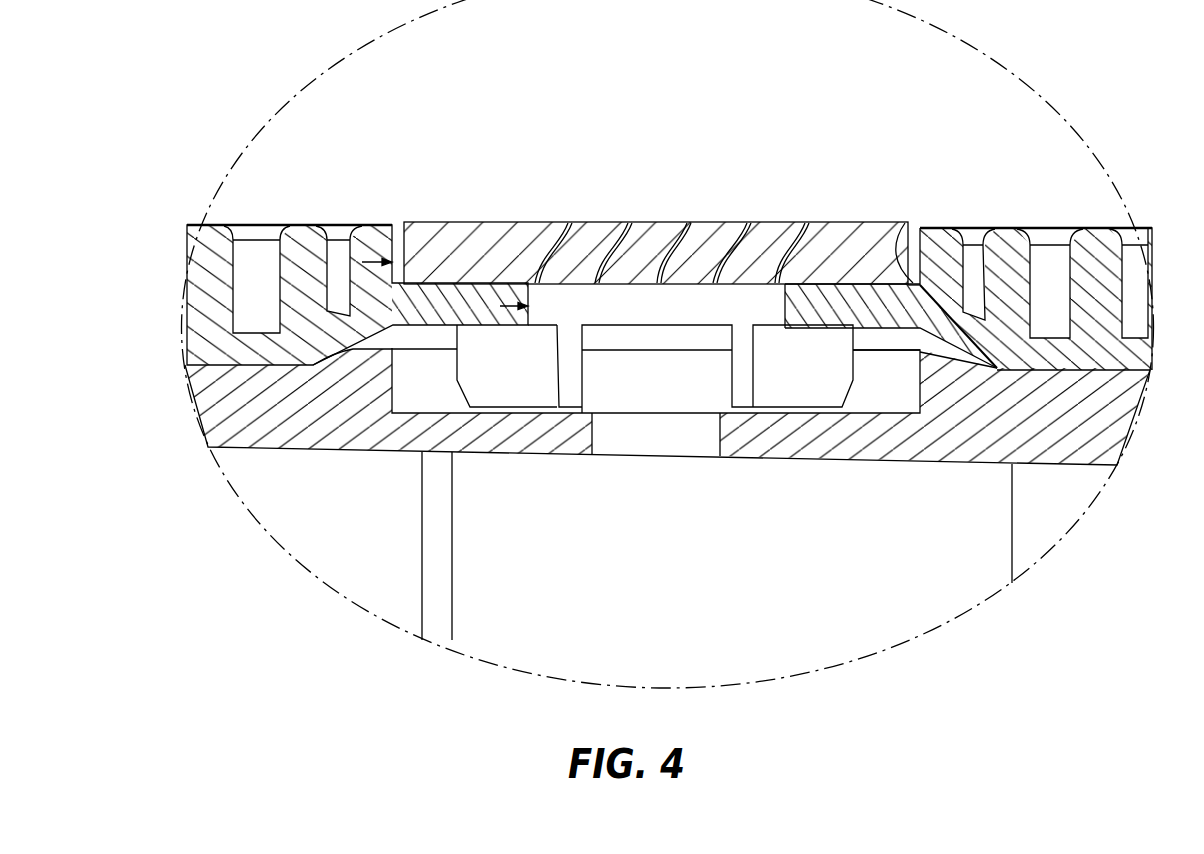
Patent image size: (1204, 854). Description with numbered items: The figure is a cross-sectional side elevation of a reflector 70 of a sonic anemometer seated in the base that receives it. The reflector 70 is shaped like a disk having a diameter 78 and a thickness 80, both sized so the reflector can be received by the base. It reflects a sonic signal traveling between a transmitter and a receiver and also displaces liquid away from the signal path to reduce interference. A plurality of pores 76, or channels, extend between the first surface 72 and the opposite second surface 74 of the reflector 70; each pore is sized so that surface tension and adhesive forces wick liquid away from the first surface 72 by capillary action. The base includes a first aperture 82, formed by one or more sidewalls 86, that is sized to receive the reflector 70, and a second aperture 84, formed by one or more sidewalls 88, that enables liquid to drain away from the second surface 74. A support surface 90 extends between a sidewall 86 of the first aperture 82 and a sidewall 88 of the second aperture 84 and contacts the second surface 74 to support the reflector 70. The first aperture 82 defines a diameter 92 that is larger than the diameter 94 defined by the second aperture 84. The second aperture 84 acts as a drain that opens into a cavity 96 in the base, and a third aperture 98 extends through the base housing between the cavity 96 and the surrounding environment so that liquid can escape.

The reflector 70 is at (426, 228).
The first surface 72 is at (828, 225).
The second surface 74 is at (688, 284).
The pores 76 is at (731, 240).
The diameter 78 is at (909, 213).
The thickness 80 is at (587, 223).
The first aperture 82 is at (530, 212).
The second aperture 84 is at (613, 310).
The sidewall 86 is at (918, 262).
The sidewall 88 is at (783, 306).
The support surface 90 is at (997, 370).
The diameter 92 is at (930, 266).
The diameter 94 is at (794, 307).
The cavity 96 is at (870, 392).
The third aperture 98 is at (635, 438).